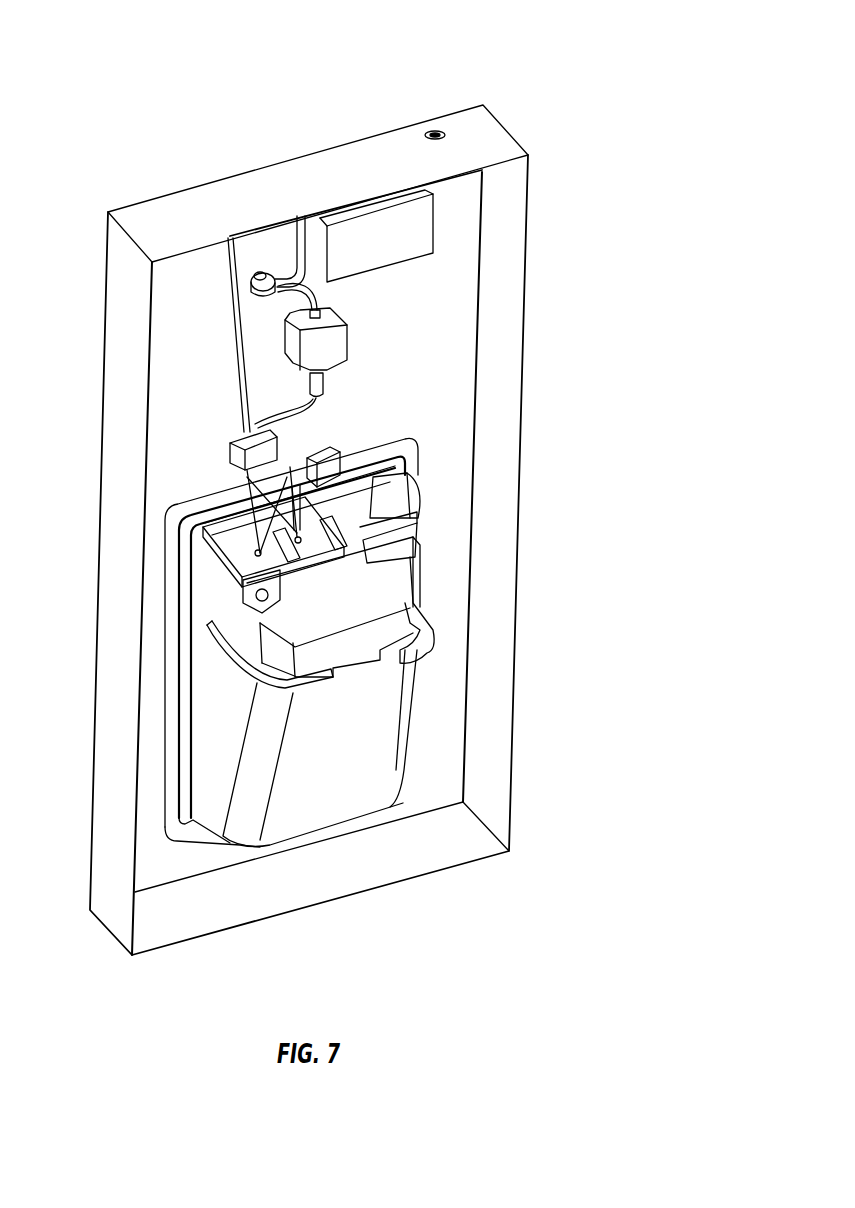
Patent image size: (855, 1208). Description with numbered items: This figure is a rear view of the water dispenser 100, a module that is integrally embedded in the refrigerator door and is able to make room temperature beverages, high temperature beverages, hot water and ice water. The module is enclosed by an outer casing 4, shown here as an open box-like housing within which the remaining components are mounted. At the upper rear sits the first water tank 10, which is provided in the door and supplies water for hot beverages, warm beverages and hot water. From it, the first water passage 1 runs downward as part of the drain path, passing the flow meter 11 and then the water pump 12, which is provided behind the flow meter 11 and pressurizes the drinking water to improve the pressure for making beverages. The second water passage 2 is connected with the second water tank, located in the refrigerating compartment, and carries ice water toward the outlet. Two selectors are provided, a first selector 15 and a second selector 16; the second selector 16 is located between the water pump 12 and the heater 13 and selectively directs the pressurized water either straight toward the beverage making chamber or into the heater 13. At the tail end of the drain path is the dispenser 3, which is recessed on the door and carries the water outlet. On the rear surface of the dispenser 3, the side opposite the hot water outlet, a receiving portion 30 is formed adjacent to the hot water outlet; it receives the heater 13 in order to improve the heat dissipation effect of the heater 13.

The water dispenser 100 is at (302, 47).
The outer casing 4 is at (492, 132).
The second water passage 2 is at (228, 292).
The first water passage 1 is at (297, 248).
The flow meter 11 is at (260, 288).
The water pump 12 is at (323, 350).
The second selector 16 is at (230, 443).
The first selector 15 is at (327, 447).
The dispenser 3 is at (193, 502).
The receiving portion 30 is at (418, 527).
The heater 13 is at (400, 488).
The first water tank 10 is at (400, 243).